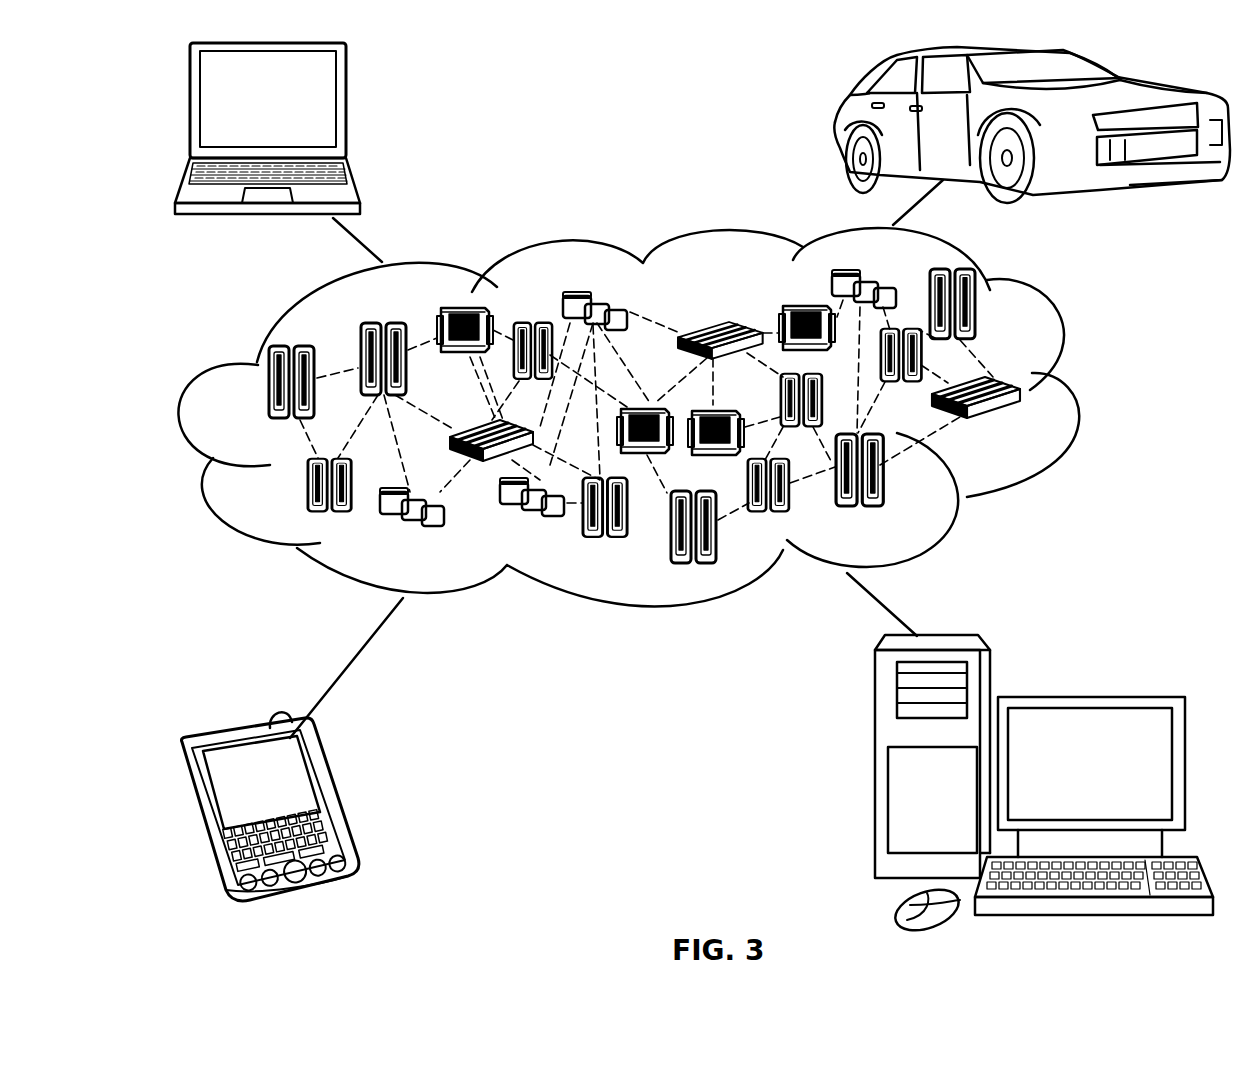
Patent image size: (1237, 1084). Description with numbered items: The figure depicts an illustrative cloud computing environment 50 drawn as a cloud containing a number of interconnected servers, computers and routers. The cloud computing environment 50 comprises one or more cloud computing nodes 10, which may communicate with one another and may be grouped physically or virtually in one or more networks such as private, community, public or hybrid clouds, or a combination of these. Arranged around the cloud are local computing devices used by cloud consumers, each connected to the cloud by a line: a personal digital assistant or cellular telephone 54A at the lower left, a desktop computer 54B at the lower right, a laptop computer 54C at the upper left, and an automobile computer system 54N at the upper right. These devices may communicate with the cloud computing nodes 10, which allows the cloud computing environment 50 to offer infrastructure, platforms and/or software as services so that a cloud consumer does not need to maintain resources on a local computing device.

The cloud computing environment 50 is at (670, 417).
The cloud computing node 10 is at (706, 416).
The personal digital assistant or cellular telephone 54A is at (337, 793).
The desktop computer 54B is at (1090, 697).
The laptop computer 54C is at (347, 108).
The automobile computer system 54N is at (842, 122).